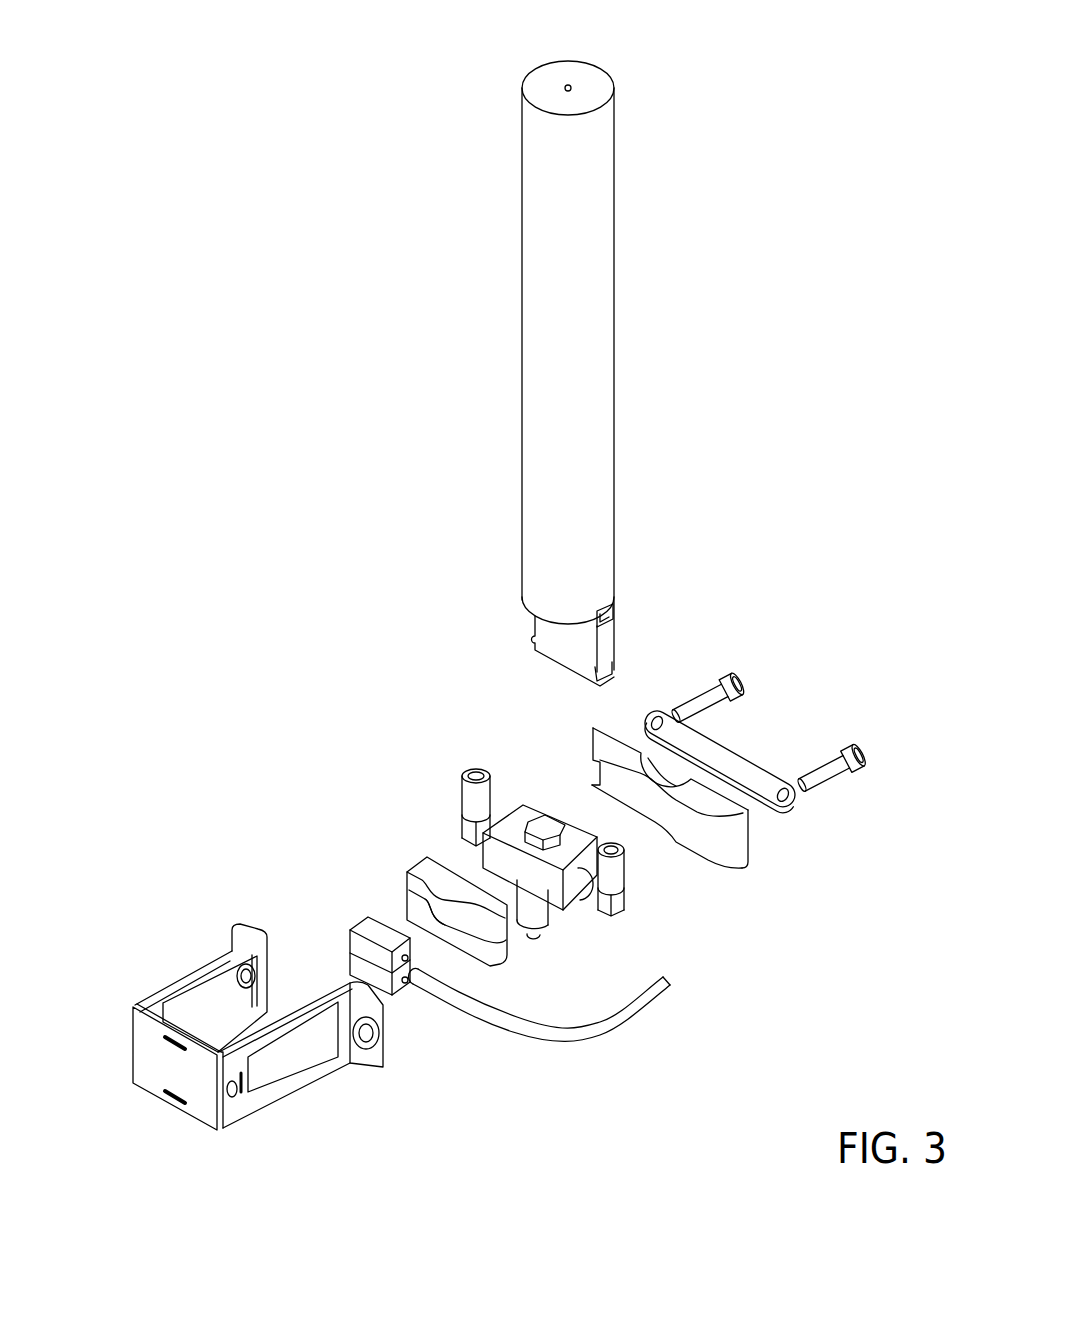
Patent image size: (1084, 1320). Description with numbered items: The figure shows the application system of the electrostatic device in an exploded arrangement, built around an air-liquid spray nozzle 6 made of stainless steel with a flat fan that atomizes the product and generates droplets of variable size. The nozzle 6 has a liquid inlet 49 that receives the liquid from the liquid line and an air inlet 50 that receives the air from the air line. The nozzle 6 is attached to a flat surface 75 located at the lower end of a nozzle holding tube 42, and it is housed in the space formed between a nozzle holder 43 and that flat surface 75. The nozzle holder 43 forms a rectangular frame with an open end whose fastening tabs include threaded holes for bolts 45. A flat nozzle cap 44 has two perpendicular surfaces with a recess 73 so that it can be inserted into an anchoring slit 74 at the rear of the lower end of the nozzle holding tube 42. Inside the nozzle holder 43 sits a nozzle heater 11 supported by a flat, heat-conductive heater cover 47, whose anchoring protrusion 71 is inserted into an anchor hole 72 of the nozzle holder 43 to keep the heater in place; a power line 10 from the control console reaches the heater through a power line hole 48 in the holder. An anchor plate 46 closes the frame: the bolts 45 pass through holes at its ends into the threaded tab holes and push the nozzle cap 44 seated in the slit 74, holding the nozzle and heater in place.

The nozzle holding tube 42 is at (580, 262).
The anchoring slit 74 is at (615, 610).
The flat surface 75 is at (565, 640).
The bolts 45 is at (712, 695).
The anchor plate 46 is at (793, 812).
The nozzle cap 44 is at (709, 828).
The recess 73 is at (662, 833).
The liquid inlet 49 is at (473, 772).
The air inlet 50 is at (608, 847).
The air-liquid spray nozzle 6 is at (543, 930).
The heater cover 47 is at (446, 932).
The anchoring protrusion 71 is at (413, 917).
The nozzle heater 11 is at (362, 943).
The nozzle holder 43 is at (219, 1054).
The anchor hole 72 is at (172, 1097).
The power line hole 48 is at (238, 1093).
The power line 10 is at (570, 1045).